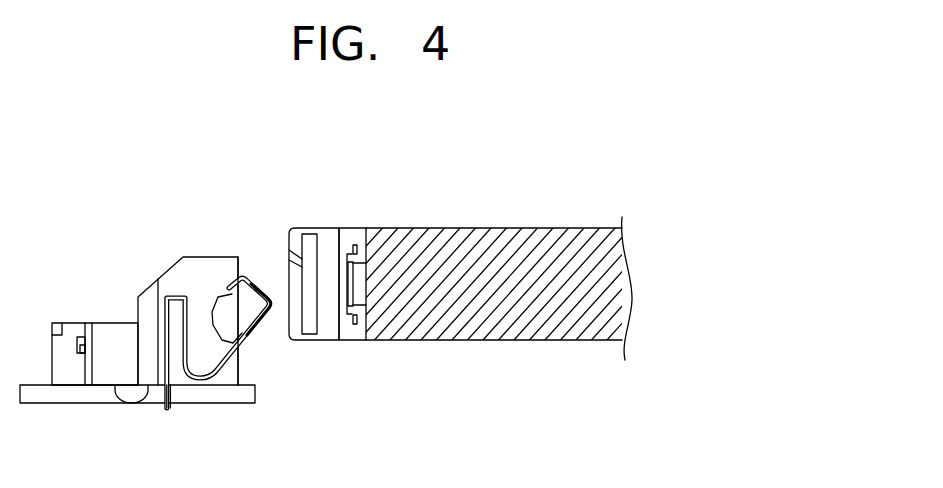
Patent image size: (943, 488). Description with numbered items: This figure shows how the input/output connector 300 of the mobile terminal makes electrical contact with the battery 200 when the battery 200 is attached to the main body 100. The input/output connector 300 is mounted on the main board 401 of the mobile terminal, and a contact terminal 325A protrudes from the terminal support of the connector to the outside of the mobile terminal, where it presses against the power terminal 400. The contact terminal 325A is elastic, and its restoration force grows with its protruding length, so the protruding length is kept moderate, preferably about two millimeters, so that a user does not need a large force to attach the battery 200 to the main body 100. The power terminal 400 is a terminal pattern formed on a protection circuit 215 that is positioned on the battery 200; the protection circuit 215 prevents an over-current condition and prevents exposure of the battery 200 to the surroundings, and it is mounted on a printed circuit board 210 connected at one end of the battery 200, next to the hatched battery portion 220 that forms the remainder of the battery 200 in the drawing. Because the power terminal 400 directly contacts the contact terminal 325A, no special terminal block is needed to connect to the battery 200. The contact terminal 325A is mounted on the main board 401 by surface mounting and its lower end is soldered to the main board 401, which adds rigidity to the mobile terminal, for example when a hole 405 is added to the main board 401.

The main body 100 is at (75, 317).
The battery 200 is at (514, 222).
The printed circuit board (PCB) 210 is at (352, 237).
The protection circuit 215 is at (318, 309).
The connector body (hatched) 220 is at (420, 228).
The input/output connector 300 is at (200, 251).
The contact terminal 325A is at (254, 277).
The power terminal 400 is at (289, 311).
The main board 401 is at (66, 412).
The hole 405 is at (170, 407).